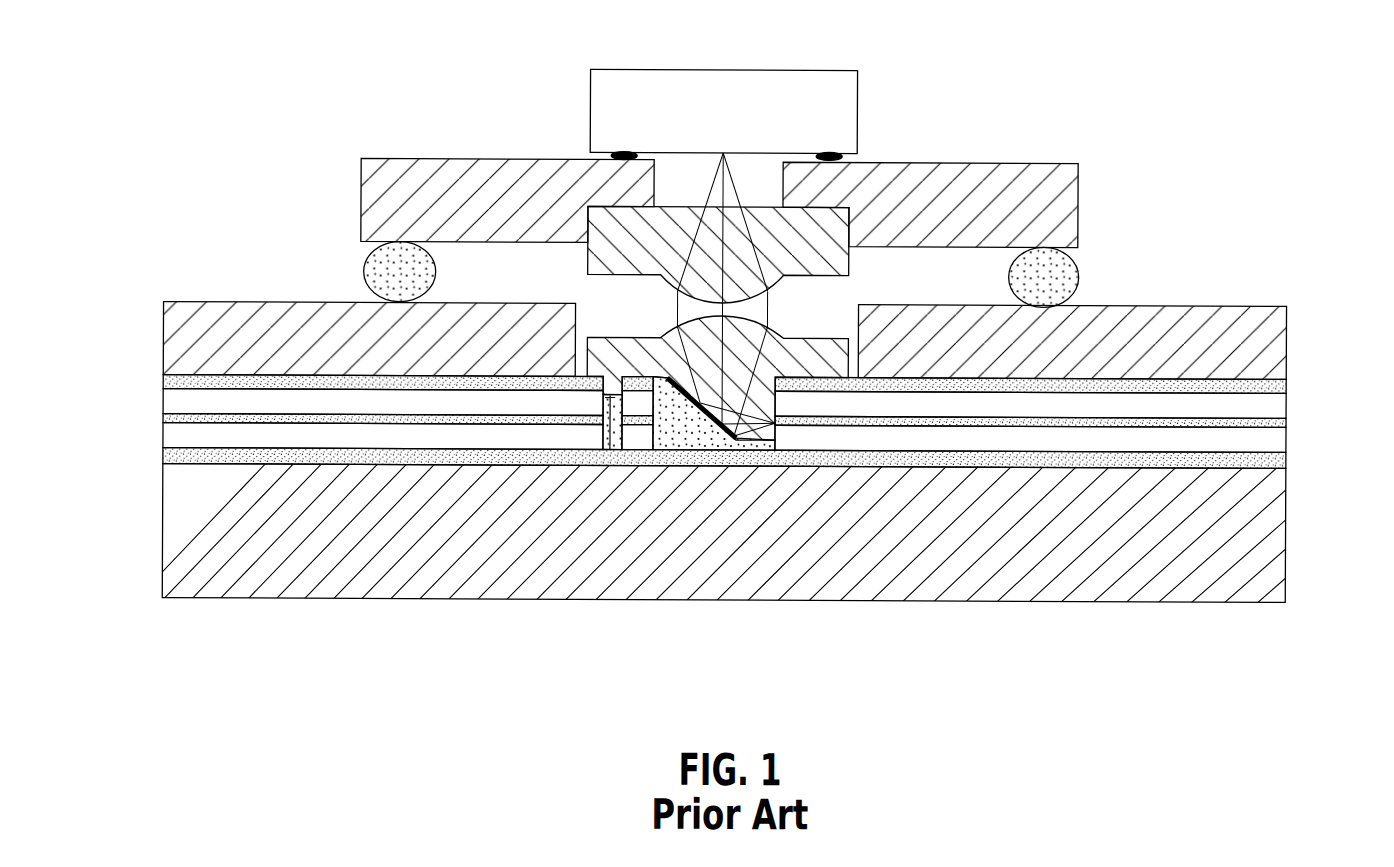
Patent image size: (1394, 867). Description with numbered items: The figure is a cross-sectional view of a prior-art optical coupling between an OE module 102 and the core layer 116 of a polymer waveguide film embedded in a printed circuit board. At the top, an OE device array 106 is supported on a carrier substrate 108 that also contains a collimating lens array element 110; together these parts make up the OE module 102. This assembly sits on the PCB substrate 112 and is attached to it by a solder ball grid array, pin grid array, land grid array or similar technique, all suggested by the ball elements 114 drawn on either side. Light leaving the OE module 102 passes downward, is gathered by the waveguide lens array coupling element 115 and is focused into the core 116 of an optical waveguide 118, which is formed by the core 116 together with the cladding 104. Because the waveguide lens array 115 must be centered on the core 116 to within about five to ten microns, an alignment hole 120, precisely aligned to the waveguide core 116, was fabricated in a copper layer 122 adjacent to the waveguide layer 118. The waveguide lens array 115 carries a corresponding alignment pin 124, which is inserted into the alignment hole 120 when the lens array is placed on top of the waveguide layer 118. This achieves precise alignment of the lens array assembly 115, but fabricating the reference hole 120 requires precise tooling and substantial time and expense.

The OE module 102 is at (856, 78).
The cladding 104 is at (172, 400).
The OE device array 106 is at (888, 150).
The carrier substrate 108 is at (362, 191).
The collimating lens array element 110 is at (585, 258).
The PCB substrate 112 is at (238, 600).
The ball elements 114 is at (380, 282).
The waveguide lens array coupling element 115 is at (803, 338).
The core layer 116 is at (166, 420).
The optical waveguide 118 is at (1295, 380).
The alignment hole 120 is at (603, 437).
The copper layer 122 is at (170, 381).
The alignment pin 124 is at (610, 450).